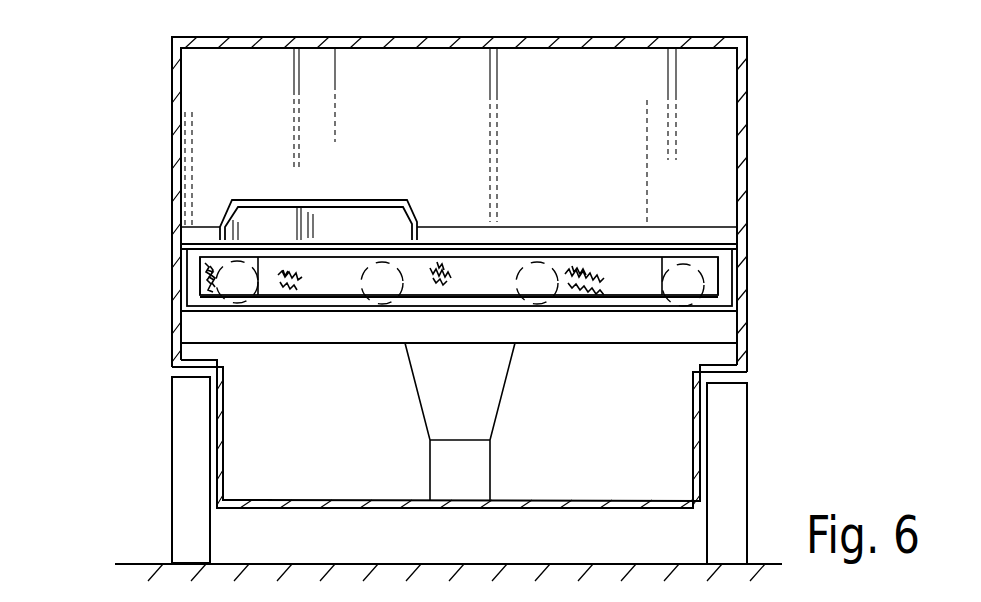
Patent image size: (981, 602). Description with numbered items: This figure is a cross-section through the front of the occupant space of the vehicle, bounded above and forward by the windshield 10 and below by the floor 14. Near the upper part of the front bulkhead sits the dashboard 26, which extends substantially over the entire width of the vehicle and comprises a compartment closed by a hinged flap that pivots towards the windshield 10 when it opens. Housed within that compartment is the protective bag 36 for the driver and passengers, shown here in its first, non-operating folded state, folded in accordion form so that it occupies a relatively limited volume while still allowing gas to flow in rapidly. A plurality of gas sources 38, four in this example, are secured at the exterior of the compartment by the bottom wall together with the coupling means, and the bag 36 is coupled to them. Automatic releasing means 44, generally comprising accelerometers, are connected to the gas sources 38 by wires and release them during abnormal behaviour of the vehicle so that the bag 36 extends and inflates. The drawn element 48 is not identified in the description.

The windshield 10 is at (218, 103).
The floor 14 is at (297, 507).
The dashboard 26 is at (437, 230).
The protective bag 36 is at (327, 275).
The gas source 38 is at (345, 285).
The automatic releasing means 44 is at (482, 280).
The end compartment 48 is at (200, 292).